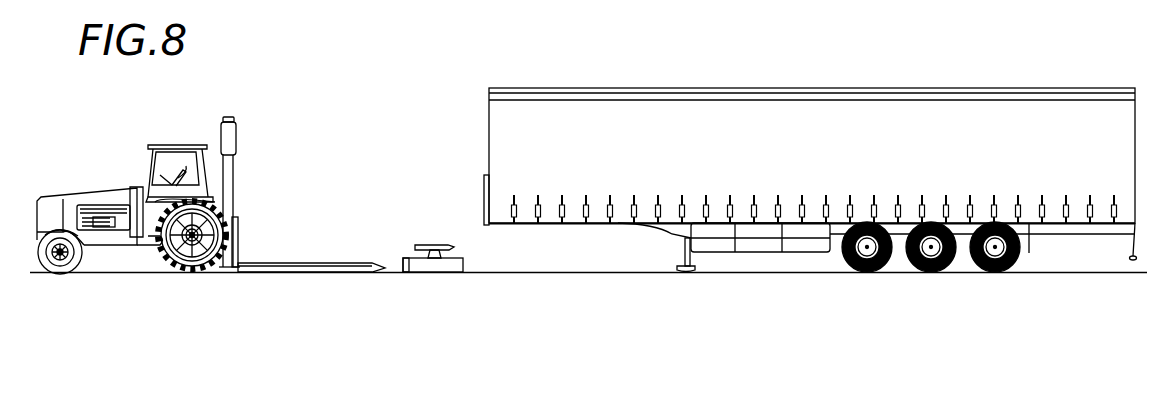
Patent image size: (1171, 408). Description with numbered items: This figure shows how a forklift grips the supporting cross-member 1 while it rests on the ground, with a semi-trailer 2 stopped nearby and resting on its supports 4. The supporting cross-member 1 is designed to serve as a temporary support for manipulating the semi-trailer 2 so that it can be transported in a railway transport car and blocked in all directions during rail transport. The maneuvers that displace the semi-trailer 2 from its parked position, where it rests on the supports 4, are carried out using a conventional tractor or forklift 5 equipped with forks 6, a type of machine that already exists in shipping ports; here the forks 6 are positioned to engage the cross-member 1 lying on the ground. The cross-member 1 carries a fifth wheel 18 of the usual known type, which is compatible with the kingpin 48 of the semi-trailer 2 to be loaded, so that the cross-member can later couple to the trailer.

The supporting cross-member 1 is at (429, 284).
The semi-trailer 2 is at (496, 71).
The supports 4 is at (704, 277).
The forklift 5 is at (97, 145).
The forks 6 is at (306, 280).
The fifth wheel 18 is at (434, 236).
The kingpin 48 is at (572, 228).